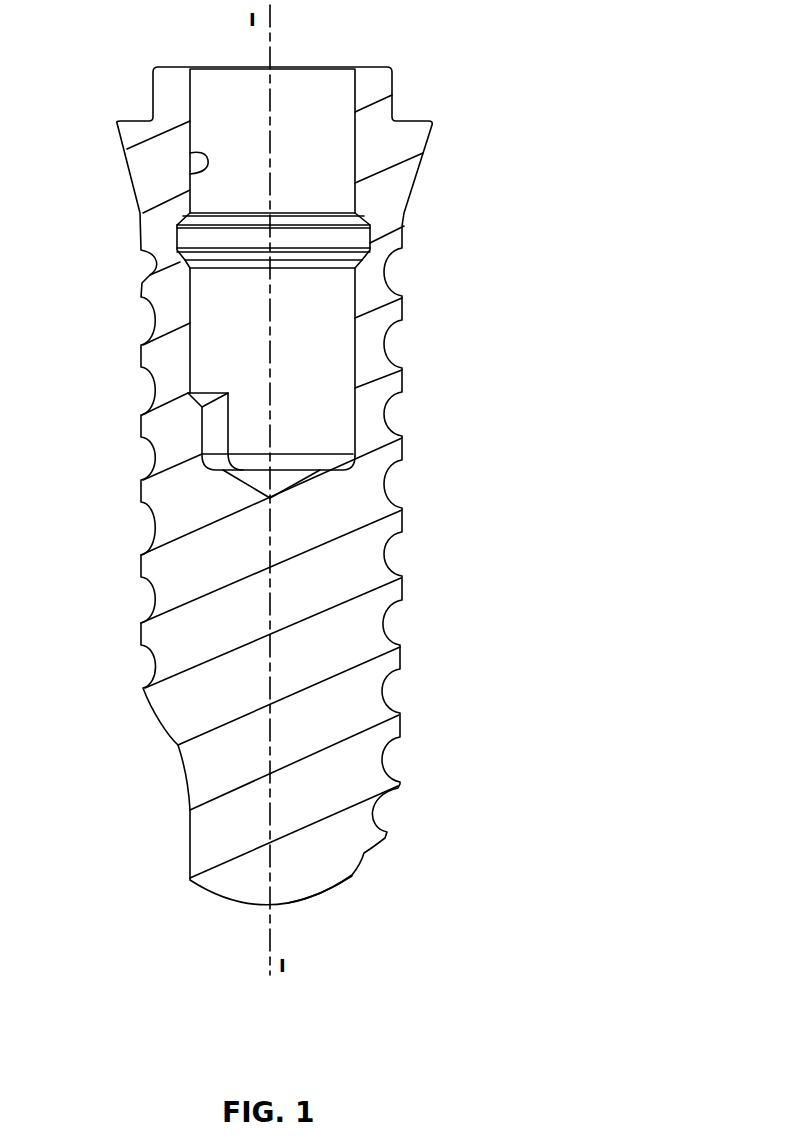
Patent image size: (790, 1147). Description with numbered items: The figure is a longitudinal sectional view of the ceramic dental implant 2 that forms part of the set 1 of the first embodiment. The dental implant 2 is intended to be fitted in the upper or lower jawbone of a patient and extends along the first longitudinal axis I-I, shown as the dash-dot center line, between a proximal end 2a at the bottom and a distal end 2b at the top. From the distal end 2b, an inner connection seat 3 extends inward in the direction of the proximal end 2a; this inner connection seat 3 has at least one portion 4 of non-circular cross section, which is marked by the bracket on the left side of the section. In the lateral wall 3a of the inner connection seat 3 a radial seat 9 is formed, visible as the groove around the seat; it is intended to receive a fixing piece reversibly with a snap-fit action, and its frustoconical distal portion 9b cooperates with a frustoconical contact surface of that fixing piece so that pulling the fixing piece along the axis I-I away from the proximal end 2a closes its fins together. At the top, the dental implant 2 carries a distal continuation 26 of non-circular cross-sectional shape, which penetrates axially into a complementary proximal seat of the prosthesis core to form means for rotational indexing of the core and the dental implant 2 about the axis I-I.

The set 1 is at (540, 418).
The ceramic dental implant 2 is at (434, 481).
The proximal end 2a is at (207, 866).
The distal end 2b is at (405, 137).
The inner connection seat 3 is at (340, 93).
The lateral wall 3a is at (190, 174).
The portion of non-circular cross section 4 is at (243, 470).
The radial seat 9 is at (177, 247).
The frustoconical distal portion 9b is at (369, 218).
The distal continuation 26 is at (383, 82).